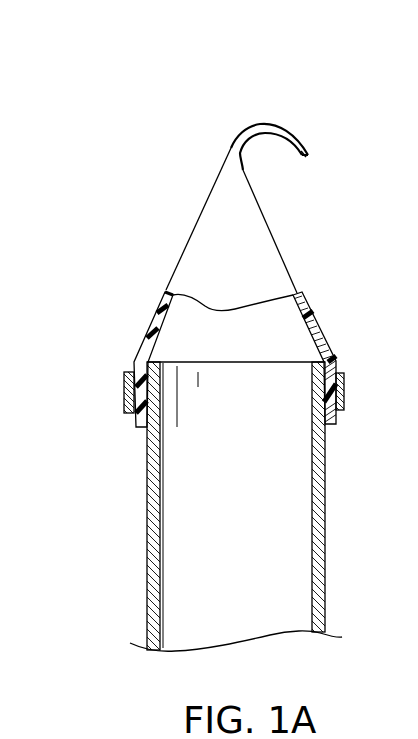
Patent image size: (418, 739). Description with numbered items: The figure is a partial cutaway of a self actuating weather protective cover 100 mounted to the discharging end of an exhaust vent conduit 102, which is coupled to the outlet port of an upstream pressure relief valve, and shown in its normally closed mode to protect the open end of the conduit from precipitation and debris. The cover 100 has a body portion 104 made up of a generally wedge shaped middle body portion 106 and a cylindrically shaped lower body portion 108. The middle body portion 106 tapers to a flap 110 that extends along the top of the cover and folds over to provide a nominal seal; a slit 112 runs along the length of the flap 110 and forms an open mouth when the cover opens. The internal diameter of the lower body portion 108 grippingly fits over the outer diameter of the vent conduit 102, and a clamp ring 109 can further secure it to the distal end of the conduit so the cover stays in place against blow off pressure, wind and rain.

The self actuating weather protective cover 100 is at (161, 281).
The exhaust vent conduit 102 is at (145, 513).
The body portion 104 is at (140, 352).
The middle body portion 106 is at (316, 323).
The lower body portion 108 is at (338, 412).
The clamp ring 109 is at (126, 390).
The flap 110 is at (272, 124).
The slit 112 is at (306, 156).